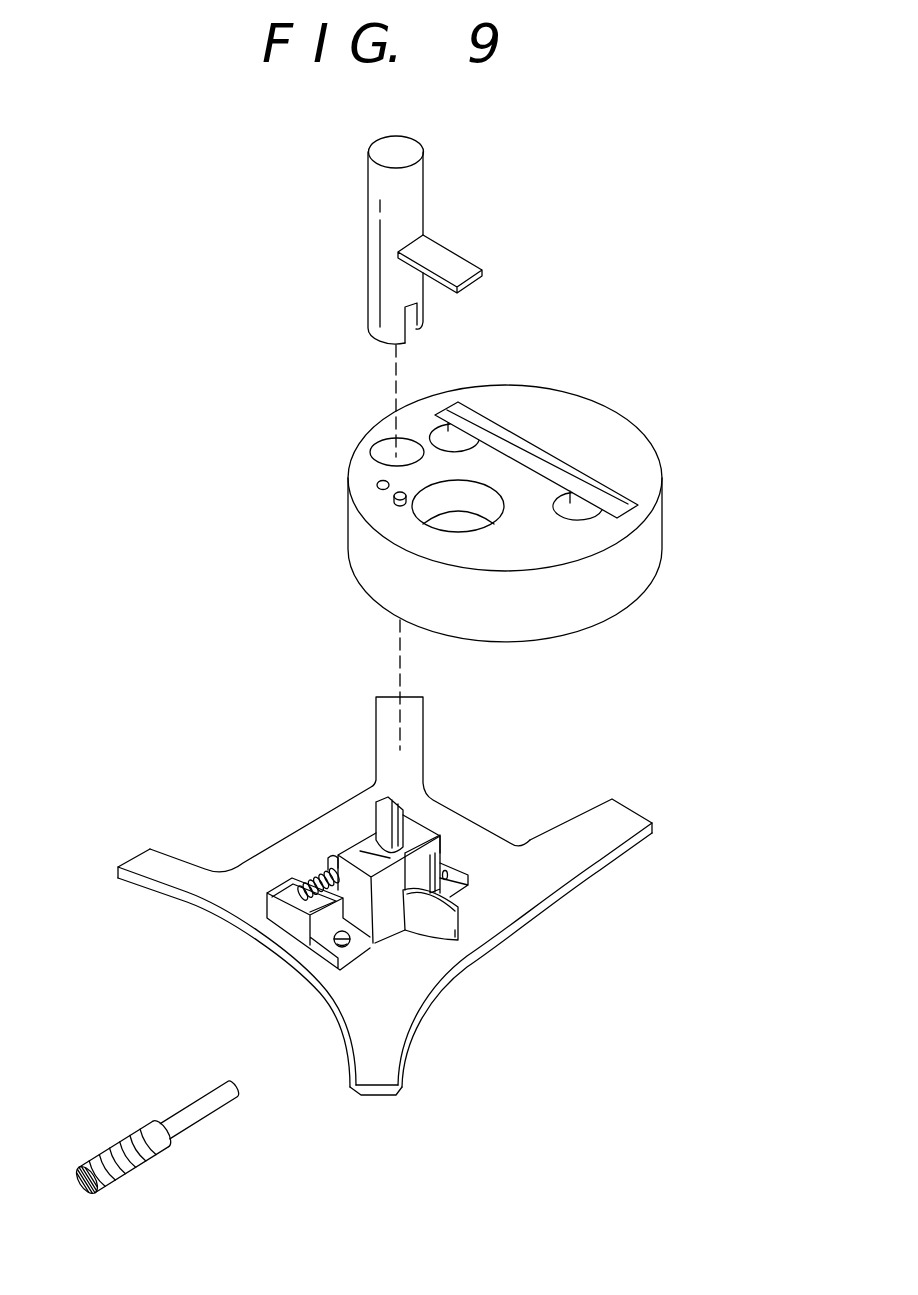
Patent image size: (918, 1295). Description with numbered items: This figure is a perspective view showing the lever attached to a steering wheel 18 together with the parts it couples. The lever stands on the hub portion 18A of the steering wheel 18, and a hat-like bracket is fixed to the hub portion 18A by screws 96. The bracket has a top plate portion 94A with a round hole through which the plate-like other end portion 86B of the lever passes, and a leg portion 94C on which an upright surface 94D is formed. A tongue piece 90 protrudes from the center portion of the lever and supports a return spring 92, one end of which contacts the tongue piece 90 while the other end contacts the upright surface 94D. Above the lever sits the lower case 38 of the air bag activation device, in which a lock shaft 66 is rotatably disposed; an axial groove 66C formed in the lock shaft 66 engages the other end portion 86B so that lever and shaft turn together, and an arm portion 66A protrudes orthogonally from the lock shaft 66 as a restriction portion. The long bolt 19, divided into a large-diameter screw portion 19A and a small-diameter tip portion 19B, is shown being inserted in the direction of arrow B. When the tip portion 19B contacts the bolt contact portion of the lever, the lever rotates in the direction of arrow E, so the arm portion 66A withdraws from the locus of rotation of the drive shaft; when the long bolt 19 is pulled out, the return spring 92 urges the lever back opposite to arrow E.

The lock shaft 66 is at (428, 165).
The arm portion 66A is at (453, 266).
The axial groove 66C is at (417, 318).
The lower case 38 is at (668, 513).
The steering wheel 18 is at (448, 790).
The hub portion 18A is at (463, 842).
The tongue piece 90 is at (345, 842).
The other end portion 86B is at (376, 801).
The top plate portion 94A is at (363, 850).
The upright surface 94D is at (278, 917).
The return spring 92 is at (303, 877).
The screws 96 is at (333, 944).
The leg portion 94C is at (440, 848).
The arrow E is at (440, 1042).
The direction arrow B is at (130, 1035).
The long bolt 19 is at (173, 1149).
The screw portion 19A is at (140, 1160).
The tip portion 19B is at (200, 1115).